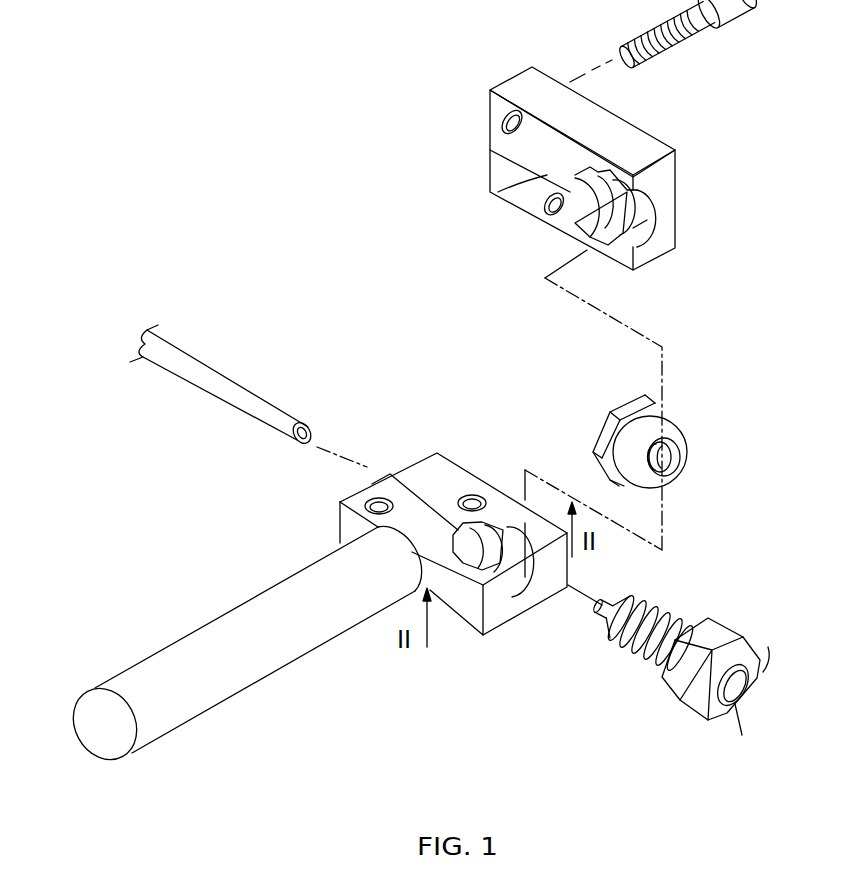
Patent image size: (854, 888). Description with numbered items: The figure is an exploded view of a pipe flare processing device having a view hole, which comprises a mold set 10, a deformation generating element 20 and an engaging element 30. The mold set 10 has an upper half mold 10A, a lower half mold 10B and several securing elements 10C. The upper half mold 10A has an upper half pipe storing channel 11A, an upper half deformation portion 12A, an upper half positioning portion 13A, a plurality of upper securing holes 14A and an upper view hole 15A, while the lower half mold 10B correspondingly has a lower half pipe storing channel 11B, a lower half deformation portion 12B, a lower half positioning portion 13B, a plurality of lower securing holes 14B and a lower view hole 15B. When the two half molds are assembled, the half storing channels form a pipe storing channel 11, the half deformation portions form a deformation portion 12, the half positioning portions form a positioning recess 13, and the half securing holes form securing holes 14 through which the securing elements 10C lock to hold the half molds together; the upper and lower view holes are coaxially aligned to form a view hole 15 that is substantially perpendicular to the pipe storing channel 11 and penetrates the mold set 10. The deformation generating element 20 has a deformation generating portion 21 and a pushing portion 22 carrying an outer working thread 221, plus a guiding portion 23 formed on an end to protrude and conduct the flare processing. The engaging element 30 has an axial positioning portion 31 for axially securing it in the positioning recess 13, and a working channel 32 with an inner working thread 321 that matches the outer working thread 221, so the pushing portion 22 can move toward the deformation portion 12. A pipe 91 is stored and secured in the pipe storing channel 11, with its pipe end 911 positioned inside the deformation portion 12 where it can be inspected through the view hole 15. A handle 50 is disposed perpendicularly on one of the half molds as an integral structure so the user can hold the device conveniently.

The mold set 10 is at (192, 86).
The upper half mold 10A is at (490, 163).
The lower half mold 10B is at (423, 503).
The securing elements 10C is at (683, 33).
The pipe storing channel 11 is at (271, 160).
The upper half pipe storing channel 11A is at (490, 192).
The lower half pipe storing channel 11B is at (428, 512).
The deformation portion 12 is at (358, 225).
The upper half deformation portion 12A is at (563, 203).
The lower half deformation portion 12B is at (473, 523).
The positioning recess 13 is at (539, 337).
The upper half positioning portion 13A is at (560, 238).
The lower half positioning portion 13B is at (518, 545).
The securing holes 14 is at (116, 3).
The upper securing holes 14A is at (504, 121).
The lower securing holes 14B is at (377, 496).
The view hole 15 is at (463, 270).
The upper view hole 15A is at (556, 218).
The lower view hole 15B is at (470, 496).
The deformation generating element 20 is at (627, 782).
The deformation generating portion 21 is at (613, 627).
The pushing portion 22 is at (621, 646).
The outer working thread 221 is at (640, 650).
The guiding portion 23 is at (598, 610).
The engaging element 30 is at (777, 342).
The axial positioning portion 31 is at (645, 402).
The working channel 32 is at (677, 439).
The inner working thread 321 is at (673, 458).
The handle 50 is at (282, 653).
The pipe 91 is at (197, 377).
The pipe end 911 is at (305, 442).